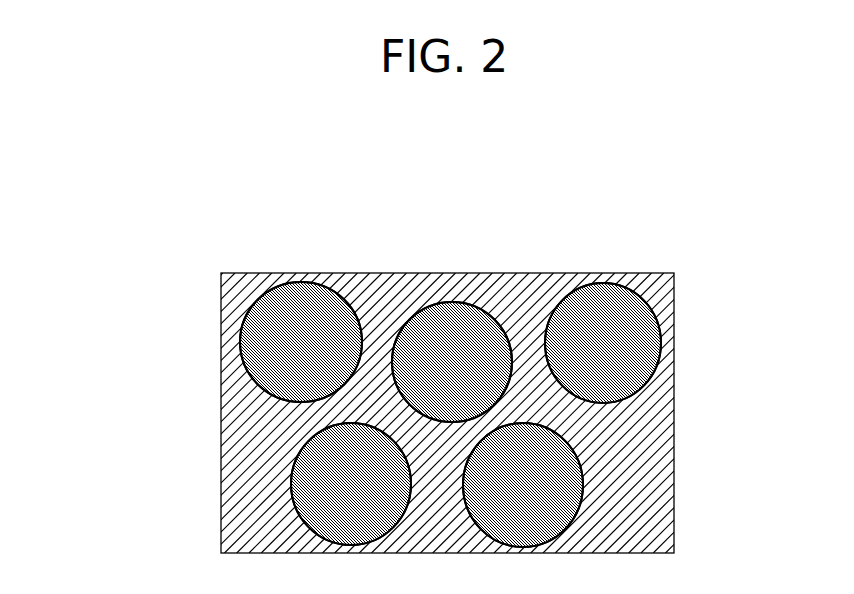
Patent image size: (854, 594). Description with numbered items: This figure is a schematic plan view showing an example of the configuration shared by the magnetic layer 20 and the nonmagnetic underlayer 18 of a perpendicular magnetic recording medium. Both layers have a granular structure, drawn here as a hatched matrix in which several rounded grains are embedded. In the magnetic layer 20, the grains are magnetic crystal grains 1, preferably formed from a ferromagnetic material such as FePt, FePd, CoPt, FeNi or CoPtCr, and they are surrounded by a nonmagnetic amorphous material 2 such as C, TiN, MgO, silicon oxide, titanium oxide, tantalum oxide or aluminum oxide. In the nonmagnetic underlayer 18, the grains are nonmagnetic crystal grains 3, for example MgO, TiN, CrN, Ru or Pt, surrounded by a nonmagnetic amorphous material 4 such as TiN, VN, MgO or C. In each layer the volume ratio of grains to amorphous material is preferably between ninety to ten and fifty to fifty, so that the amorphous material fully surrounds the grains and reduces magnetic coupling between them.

The magnetic crystal grains 1 is at (351, 414).
The nonmagnetic crystal grains 3 is at (242, 362).
The nonmagnetic amorphous material 2 is at (427, 413).
The nonmagnetic amorphous material 4 is at (221, 507).
The nonmagnetic underlayer 18 is at (427, 345).
The magnetic layer 20 is at (616, 222).